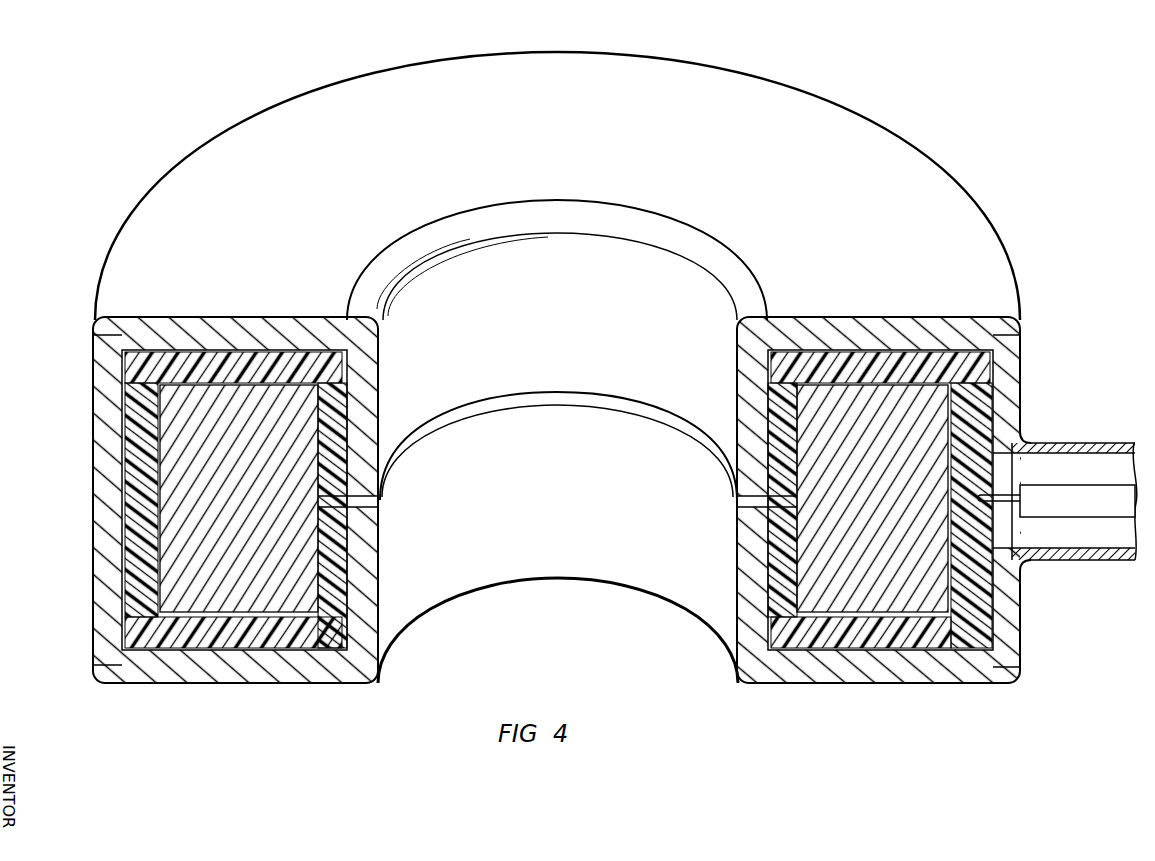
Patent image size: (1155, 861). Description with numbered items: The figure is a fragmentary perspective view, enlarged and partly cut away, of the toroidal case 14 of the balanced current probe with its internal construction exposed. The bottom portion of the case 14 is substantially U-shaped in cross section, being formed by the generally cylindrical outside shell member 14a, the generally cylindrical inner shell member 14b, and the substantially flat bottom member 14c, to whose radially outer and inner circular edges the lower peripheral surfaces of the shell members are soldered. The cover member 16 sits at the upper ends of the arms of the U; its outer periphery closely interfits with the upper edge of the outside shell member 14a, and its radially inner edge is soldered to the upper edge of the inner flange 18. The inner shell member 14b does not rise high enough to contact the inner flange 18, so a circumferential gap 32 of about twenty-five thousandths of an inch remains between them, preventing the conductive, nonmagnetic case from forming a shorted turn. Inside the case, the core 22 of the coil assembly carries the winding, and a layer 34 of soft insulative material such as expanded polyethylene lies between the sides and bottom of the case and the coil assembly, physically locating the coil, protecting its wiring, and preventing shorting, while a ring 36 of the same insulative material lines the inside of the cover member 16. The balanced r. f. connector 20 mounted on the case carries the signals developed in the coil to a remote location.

The toroidal case 14 is at (150, 683).
The outside shell member 14a is at (103, 537).
The inner shell member 14b is at (752, 617).
The bottom member 14c is at (245, 684).
The cover member 16 is at (970, 198).
The inner flange 18 is at (750, 338).
The balanced r. f. connector 20 is at (1057, 563).
The core 22 is at (195, 468).
The circumferential gap 32 is at (520, 402).
The layer of insulative material 34 is at (135, 395).
The ring of insulative material 36 is at (173, 357).